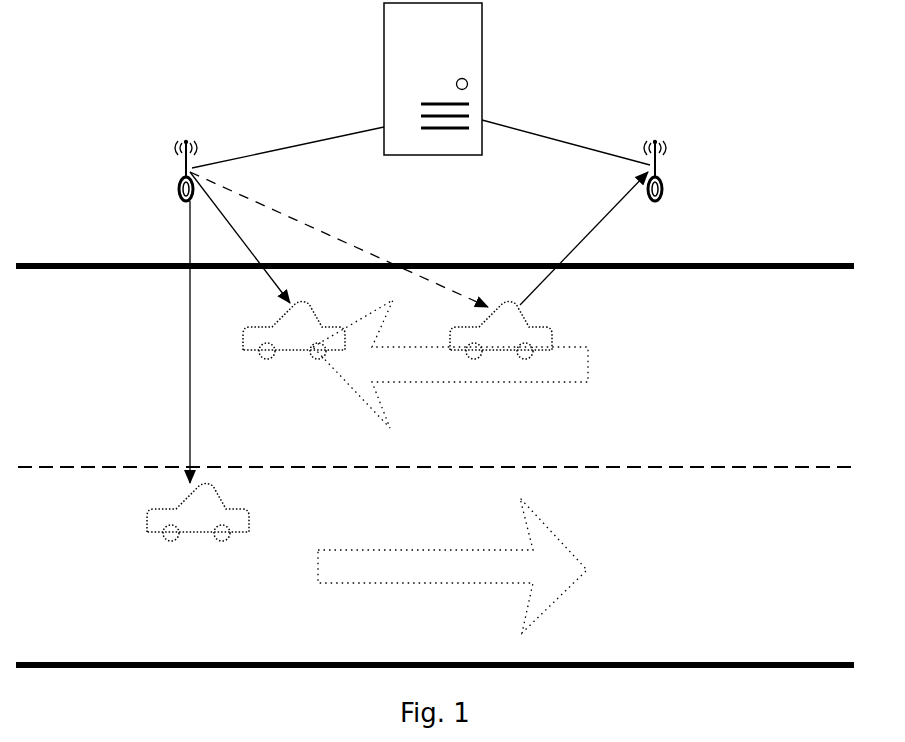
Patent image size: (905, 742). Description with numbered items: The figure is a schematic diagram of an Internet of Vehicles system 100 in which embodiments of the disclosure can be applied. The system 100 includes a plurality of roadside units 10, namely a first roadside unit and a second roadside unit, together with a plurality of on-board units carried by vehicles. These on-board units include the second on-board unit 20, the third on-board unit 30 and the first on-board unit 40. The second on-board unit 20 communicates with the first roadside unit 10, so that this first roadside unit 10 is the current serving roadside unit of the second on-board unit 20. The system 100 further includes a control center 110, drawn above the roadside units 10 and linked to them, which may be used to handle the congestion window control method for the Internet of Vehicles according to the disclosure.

The Internet of Vehicles system 100 is at (93, 38).
The control center 110 is at (482, 65).
The road side unit (RSU) 10 is at (400, 301).
The on-board unit 20 is at (294, 331).
The on-board unit 30 is at (505, 331).
The on-board unit 40 is at (198, 509).